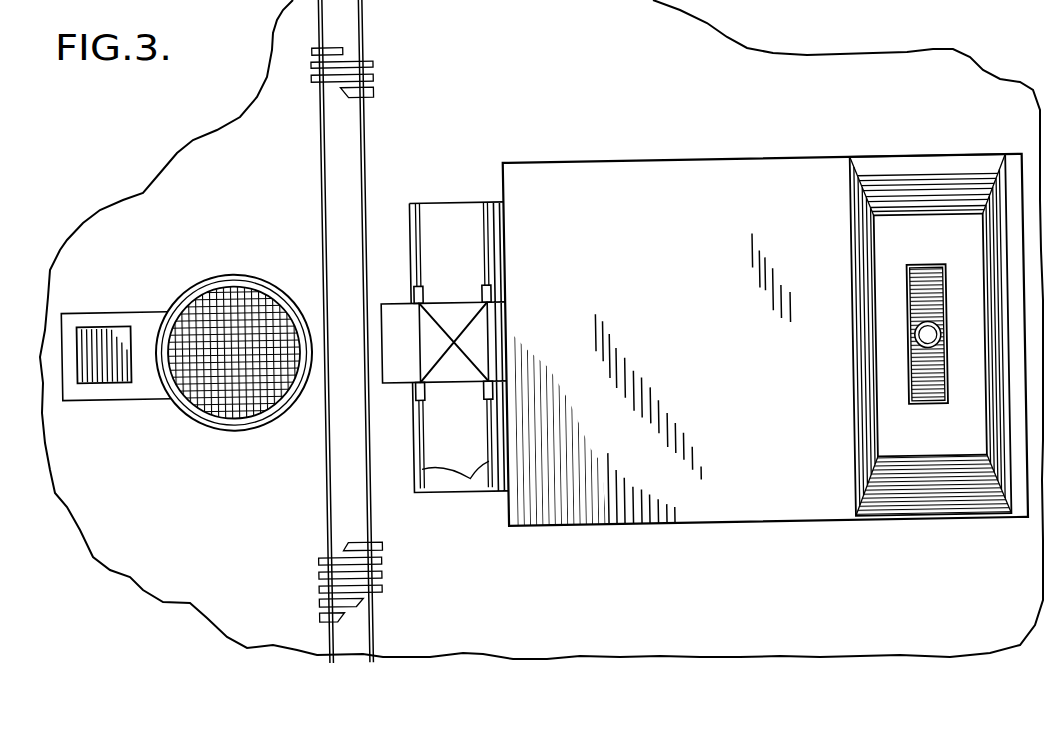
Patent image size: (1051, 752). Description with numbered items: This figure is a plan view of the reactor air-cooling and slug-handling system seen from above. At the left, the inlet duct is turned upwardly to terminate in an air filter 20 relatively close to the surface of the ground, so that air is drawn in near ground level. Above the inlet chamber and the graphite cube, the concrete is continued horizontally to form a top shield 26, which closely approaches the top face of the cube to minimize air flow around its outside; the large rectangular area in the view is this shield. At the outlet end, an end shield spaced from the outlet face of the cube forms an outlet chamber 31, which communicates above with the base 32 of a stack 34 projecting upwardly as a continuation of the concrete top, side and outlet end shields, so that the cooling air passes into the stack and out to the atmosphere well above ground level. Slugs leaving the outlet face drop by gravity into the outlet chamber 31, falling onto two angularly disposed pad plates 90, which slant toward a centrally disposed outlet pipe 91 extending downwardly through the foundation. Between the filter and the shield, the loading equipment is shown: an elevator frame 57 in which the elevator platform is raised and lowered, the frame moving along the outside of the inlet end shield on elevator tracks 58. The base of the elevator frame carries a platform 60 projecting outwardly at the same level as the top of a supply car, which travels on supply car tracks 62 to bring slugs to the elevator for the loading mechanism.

The air filter 20 is at (200, 257).
The top shield 26 is at (695, 507).
The outlet chamber 31 is at (923, 364).
The base of stack 32 is at (905, 314).
The stack 34 is at (885, 300).
The elevator frame 57 is at (423, 362).
The elevator tracks 58 is at (468, 478).
The platform 60 is at (391, 305).
The supply car tracks 62 is at (329, 215).
The pad plates 90 is at (875, 315).
The outlet pipe 91 is at (919, 336).